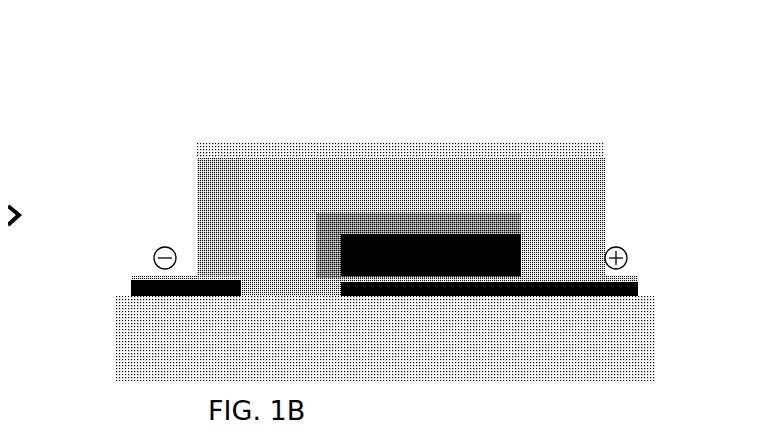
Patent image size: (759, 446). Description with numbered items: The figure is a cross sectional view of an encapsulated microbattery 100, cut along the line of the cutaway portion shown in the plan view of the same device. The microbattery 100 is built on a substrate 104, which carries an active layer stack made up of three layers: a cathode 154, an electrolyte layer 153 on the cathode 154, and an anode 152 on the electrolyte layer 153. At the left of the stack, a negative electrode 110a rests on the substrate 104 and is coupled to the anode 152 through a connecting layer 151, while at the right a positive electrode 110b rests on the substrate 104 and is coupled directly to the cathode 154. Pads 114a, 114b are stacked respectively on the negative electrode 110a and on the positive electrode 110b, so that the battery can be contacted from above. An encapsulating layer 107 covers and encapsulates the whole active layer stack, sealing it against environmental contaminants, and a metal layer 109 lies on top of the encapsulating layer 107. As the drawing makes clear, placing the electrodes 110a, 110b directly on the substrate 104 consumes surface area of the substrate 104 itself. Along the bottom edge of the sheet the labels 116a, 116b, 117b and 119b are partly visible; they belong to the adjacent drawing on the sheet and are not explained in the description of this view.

The microbattery 100 is at (441, 111).
The substrate 104 is at (648, 327).
The encapsulating layer 107 is at (594, 190).
The metal layer 109 is at (594, 146).
The negative electrode 110a is at (123, 280).
The positive electrode 110b is at (630, 281).
The pad 114a is at (122, 269).
The pad 114b is at (630, 270).
The connecting layer 151 is at (213, 262).
The anode 152 is at (235, 242).
The electrolyte layer 153 is at (313, 208).
The cathode 154 is at (392, 230).
The first lead 116a is at (41, 444).
The second lead 116b is at (481, 440).
The lead portion 117b is at (374, 445).
The lead portion 119b is at (429, 445).